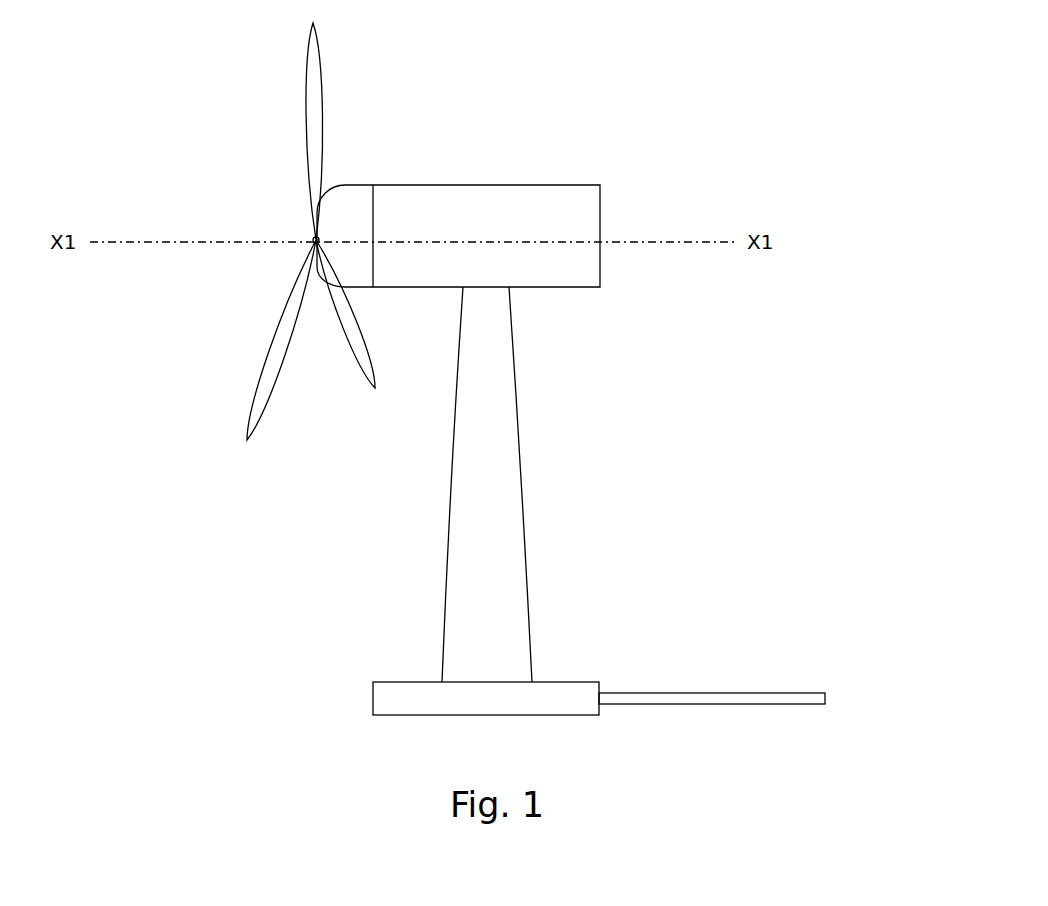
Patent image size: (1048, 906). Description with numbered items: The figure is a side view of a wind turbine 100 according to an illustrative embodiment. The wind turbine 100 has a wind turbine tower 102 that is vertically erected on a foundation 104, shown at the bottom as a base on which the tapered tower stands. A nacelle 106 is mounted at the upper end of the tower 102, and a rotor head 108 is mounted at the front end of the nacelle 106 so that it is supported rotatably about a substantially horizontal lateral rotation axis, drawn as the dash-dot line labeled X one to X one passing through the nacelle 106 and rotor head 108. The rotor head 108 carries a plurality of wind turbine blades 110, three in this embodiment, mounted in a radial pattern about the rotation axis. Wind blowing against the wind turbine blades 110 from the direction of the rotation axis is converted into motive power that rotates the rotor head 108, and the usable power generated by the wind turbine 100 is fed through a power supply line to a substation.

The wind turbine 100 is at (818, 139).
The wind turbine tower 102 is at (524, 420).
The foundation 104 is at (406, 679).
The nacelle 106 is at (509, 184).
The rotor head 108 is at (336, 252).
The wind turbine blades 110 is at (306, 150).